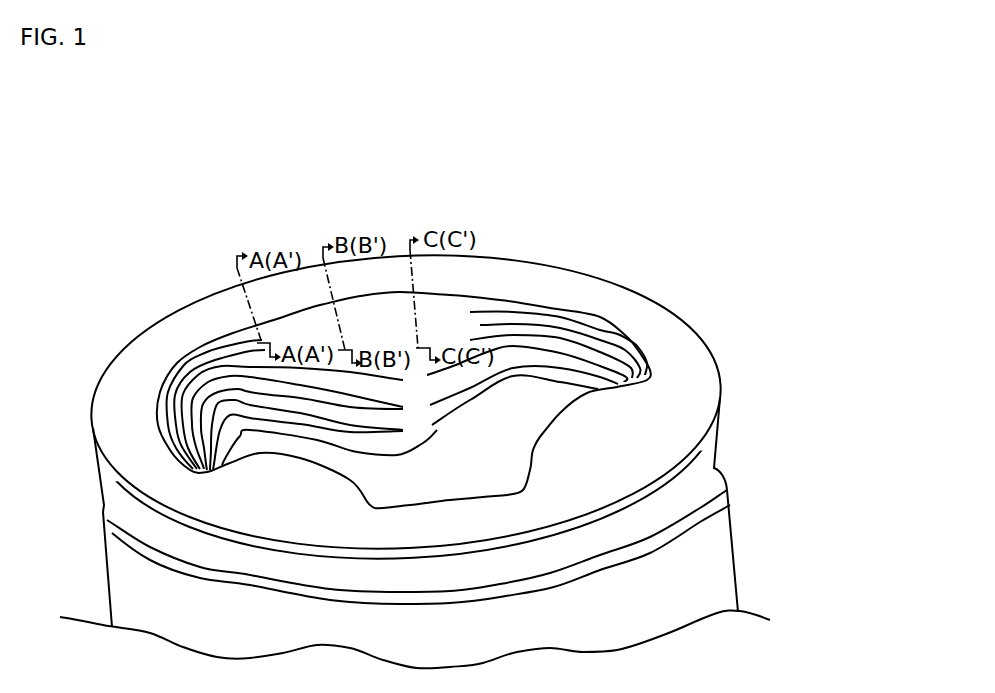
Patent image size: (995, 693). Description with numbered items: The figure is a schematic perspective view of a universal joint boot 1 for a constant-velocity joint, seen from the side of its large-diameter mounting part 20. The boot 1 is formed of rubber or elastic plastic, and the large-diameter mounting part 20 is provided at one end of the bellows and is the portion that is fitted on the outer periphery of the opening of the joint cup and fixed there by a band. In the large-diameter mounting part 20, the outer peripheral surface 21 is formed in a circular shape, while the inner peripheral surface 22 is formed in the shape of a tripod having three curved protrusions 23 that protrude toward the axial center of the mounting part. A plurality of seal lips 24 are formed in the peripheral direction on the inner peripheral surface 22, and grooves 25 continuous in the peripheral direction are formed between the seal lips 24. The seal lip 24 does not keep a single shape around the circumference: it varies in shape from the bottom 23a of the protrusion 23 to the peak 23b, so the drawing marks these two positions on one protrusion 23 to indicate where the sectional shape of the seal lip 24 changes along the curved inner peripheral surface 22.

The universal joint boot 1 is at (338, 188).
The large-diameter mounting part 20 is at (186, 318).
The outer peripheral surface 21 is at (552, 267).
The inner peripheral surface 22 is at (600, 317).
The protrusion 23 is at (492, 322).
The bottom of the protrusion 23a is at (277, 388).
The peak of the protrusion 23b is at (420, 410).
The seal lip 24 is at (190, 403).
The groove 25 is at (237, 390).